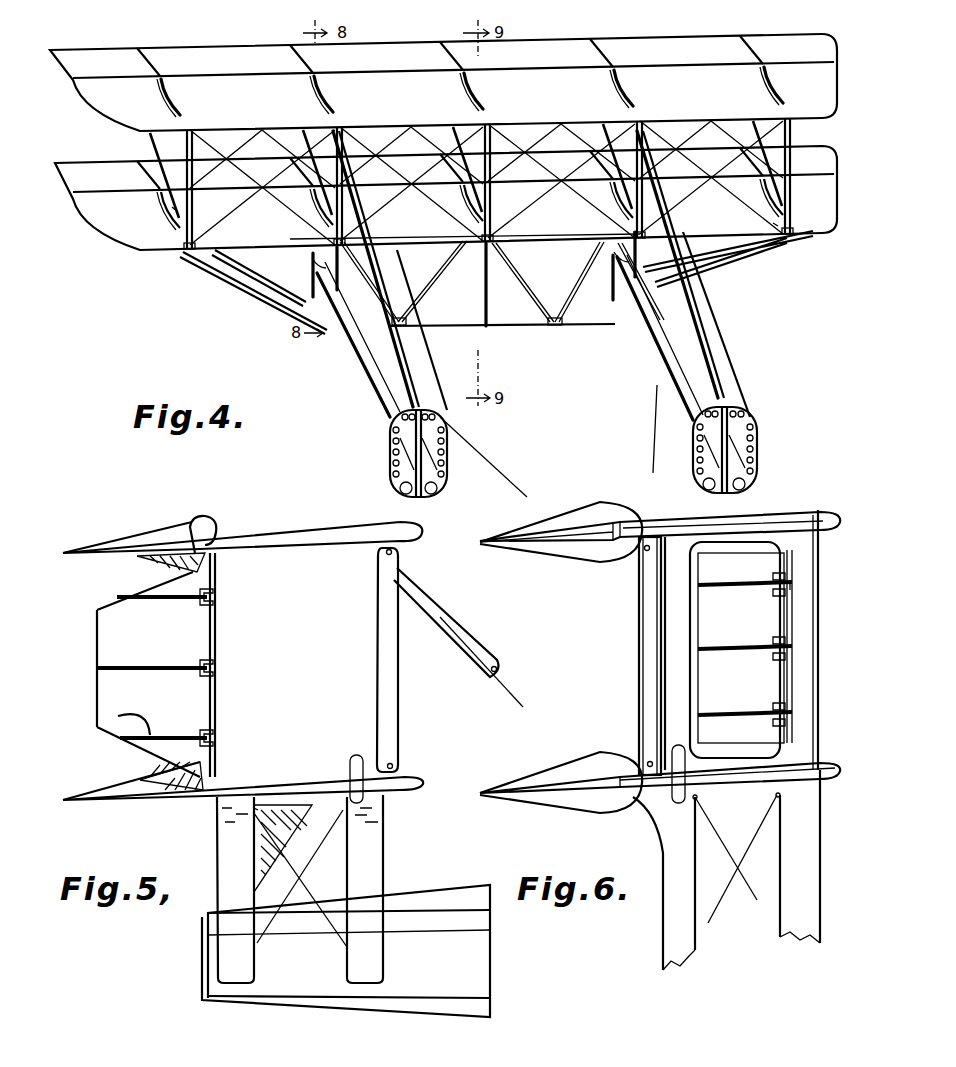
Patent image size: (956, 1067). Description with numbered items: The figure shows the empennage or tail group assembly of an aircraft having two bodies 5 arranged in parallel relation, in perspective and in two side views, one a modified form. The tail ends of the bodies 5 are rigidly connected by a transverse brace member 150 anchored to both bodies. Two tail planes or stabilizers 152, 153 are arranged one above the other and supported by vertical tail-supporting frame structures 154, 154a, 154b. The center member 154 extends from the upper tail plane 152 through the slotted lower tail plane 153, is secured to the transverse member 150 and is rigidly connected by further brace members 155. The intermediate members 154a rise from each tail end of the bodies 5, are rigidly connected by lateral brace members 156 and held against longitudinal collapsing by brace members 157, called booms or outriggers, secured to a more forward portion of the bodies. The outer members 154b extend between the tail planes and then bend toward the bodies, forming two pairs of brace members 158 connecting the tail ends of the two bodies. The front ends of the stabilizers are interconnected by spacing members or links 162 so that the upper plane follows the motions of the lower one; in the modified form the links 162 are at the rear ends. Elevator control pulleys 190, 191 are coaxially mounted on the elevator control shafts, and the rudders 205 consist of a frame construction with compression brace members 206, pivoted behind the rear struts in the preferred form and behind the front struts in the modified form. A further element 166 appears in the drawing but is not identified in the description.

In FIG. 4, the bodies 5 is at (363, 397).
In FIG. 5, the bodies 5 is at (346, 951).
In FIG. 4, the transverse brace member 150 is at (543, 330).
In FIG. 4, the upper tail plane 152 is at (443, 82).
In FIG. 5, the upper tail plane 152 is at (337, 527).
In FIG. 6, the upper tail plane 152 is at (668, 538).
In FIG. 4, the lower tail plane 153 is at (446, 198).
In FIG. 5, the lower tail plane 153 is at (410, 775).
In FIG. 6, the lower tail plane 153 is at (668, 795).
In FIG. 4, the center tail-supporting member 154 is at (483, 327).
In FIG. 4, the intermediate tail-supporting members 154a is at (300, 320).
In FIG. 5, the intermediate tail-supporting members 154a is at (258, 810).
In FIG. 4, the outer tail-supporting members 154b is at (172, 207).
In FIG. 5, the outer tail-supporting members 154b is at (276, 640).
In FIG. 6, the outer tail-supporting members 154b is at (741, 640).
In FIG. 4, the brace members 155 is at (432, 292).
In FIG. 4, the lateral brace members 156 is at (442, 256).
In FIG. 4, the brace members (booms or outriggers) 157 is at (362, 357).
In FIG. 5, the brace members (booms or outriggers) 157 is at (441, 616).
In FIG. 4, the brace members 158 is at (243, 275).
In FIG. 5, the brace members 158 is at (372, 875).
In FIG. 6, the brace members 158 is at (670, 923).
In FIG. 4, the spacing members or links 162 is at (190, 214).
In FIG. 5, the spacing members or links 162 is at (396, 710).
In FIG. 6, the spacing members or links 162 is at (648, 678).
In FIG. 5, the pivot pin 166 is at (355, 757).
In FIG. 6, the pivot pin 166 is at (672, 752).
In FIG. 5, the elevator control pulley 190 is at (147, 530).
In FIG. 6, the elevator control pulley 190 is at (603, 504).
In FIG. 5, the elevator control pulley 191 is at (120, 765).
In FIG. 6, the elevator control pulley 191 is at (565, 753).
In FIG. 4, the rudders 205 is at (148, 156).
In FIG. 5, the rudders 205 is at (156, 671).
In FIG. 6, the rudders 205 is at (753, 610).
In FIG. 5, the compression brace members 206 is at (173, 600).
In FIG. 6, the compression brace members 206 is at (717, 586).